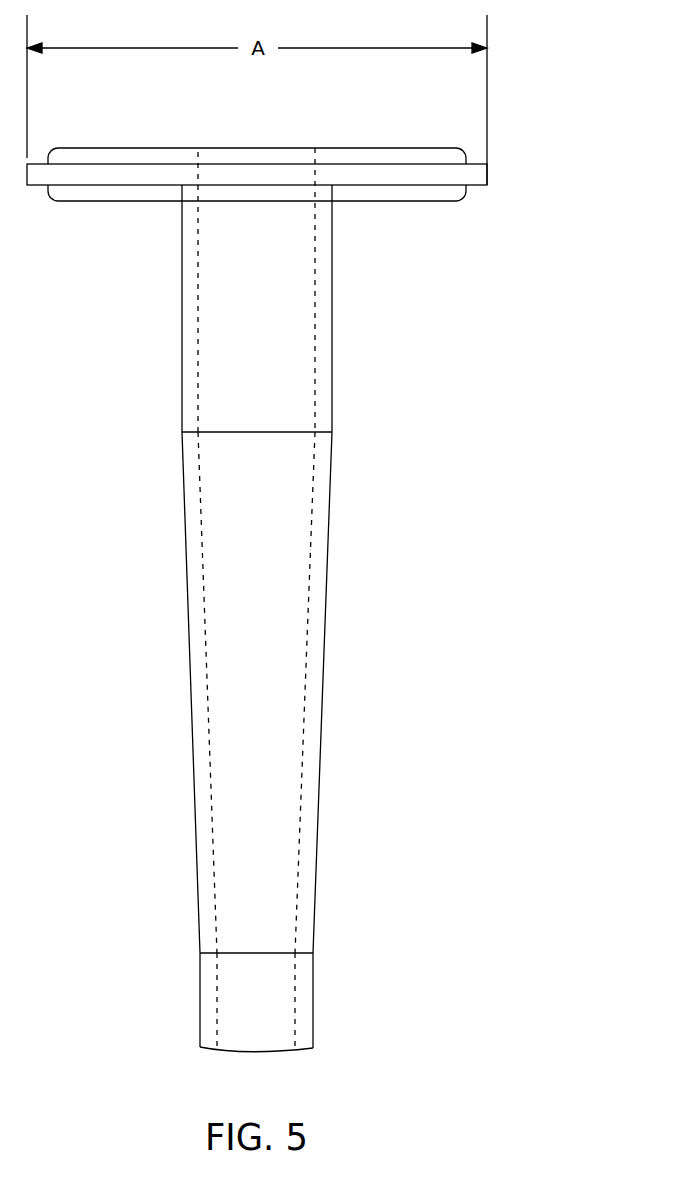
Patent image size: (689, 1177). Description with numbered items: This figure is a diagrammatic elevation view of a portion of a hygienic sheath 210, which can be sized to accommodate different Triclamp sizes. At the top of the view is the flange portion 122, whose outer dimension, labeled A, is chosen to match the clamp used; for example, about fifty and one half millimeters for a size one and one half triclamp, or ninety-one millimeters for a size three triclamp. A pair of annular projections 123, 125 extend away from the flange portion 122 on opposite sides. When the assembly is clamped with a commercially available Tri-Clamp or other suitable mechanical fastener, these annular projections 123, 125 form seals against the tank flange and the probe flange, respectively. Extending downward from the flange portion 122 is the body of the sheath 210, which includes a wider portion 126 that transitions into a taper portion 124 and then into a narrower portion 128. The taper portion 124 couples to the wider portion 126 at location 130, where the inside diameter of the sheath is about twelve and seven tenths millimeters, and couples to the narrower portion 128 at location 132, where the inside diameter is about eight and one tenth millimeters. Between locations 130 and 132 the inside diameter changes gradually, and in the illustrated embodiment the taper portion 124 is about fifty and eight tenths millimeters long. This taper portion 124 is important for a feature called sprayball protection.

The sheath 210 is at (400, 413).
The flange portion 122 is at (479, 162).
The annular projection 125 is at (414, 148).
The annular projection 123 is at (432, 201).
The wider portion 126 is at (333, 354).
The location 130 is at (333, 433).
The taper portion 124 is at (320, 743).
The location 132 is at (313, 951).
The narrower portion 128 is at (313, 985).